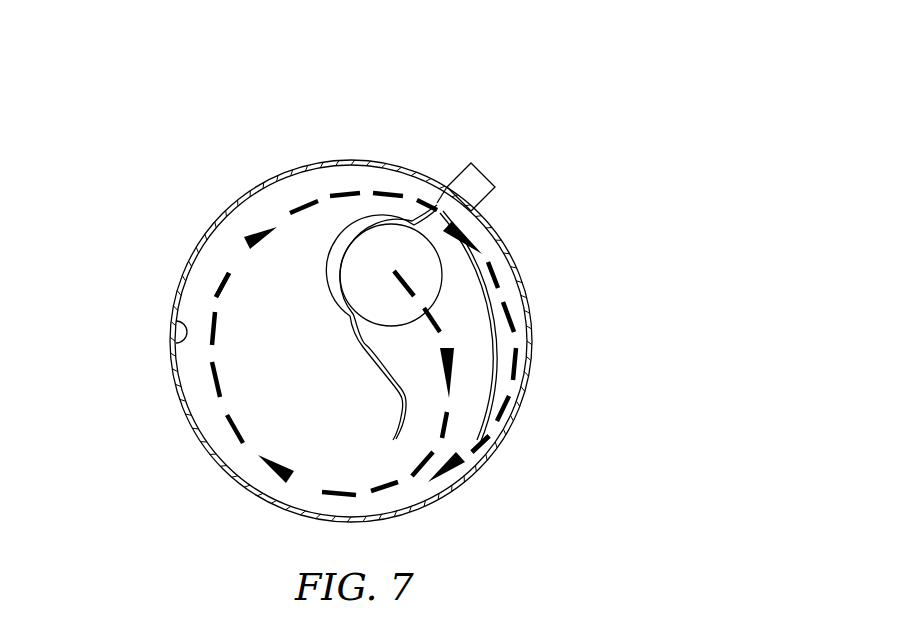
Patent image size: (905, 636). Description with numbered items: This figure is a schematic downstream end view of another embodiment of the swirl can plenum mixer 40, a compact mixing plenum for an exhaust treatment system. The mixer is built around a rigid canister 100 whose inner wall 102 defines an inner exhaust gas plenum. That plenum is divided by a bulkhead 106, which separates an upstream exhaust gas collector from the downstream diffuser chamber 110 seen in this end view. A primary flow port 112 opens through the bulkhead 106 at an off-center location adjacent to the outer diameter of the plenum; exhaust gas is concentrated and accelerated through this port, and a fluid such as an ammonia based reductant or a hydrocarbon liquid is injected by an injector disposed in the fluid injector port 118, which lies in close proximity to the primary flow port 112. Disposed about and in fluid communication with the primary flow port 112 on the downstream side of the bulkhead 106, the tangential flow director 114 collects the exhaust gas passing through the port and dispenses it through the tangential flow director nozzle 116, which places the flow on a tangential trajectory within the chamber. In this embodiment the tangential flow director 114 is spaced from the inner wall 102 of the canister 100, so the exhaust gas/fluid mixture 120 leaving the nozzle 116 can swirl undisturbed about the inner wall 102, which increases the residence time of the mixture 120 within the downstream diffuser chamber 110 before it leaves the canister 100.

The swirl can plenum mixer 40 is at (470, 146).
The rigid canister 100 is at (285, 158).
The inner wall 102 is at (176, 322).
The bulkhead 106 is at (327, 190).
The downstream diffuser chamber 110 is at (270, 373).
The primary flow port 112 is at (434, 270).
The tangential flow director 114 is at (490, 338).
The tangential flow director nozzle 116 is at (458, 438).
The fluid injector port 118 is at (474, 190).
The exhaust gas/fluid mixture 120 is at (264, 217).